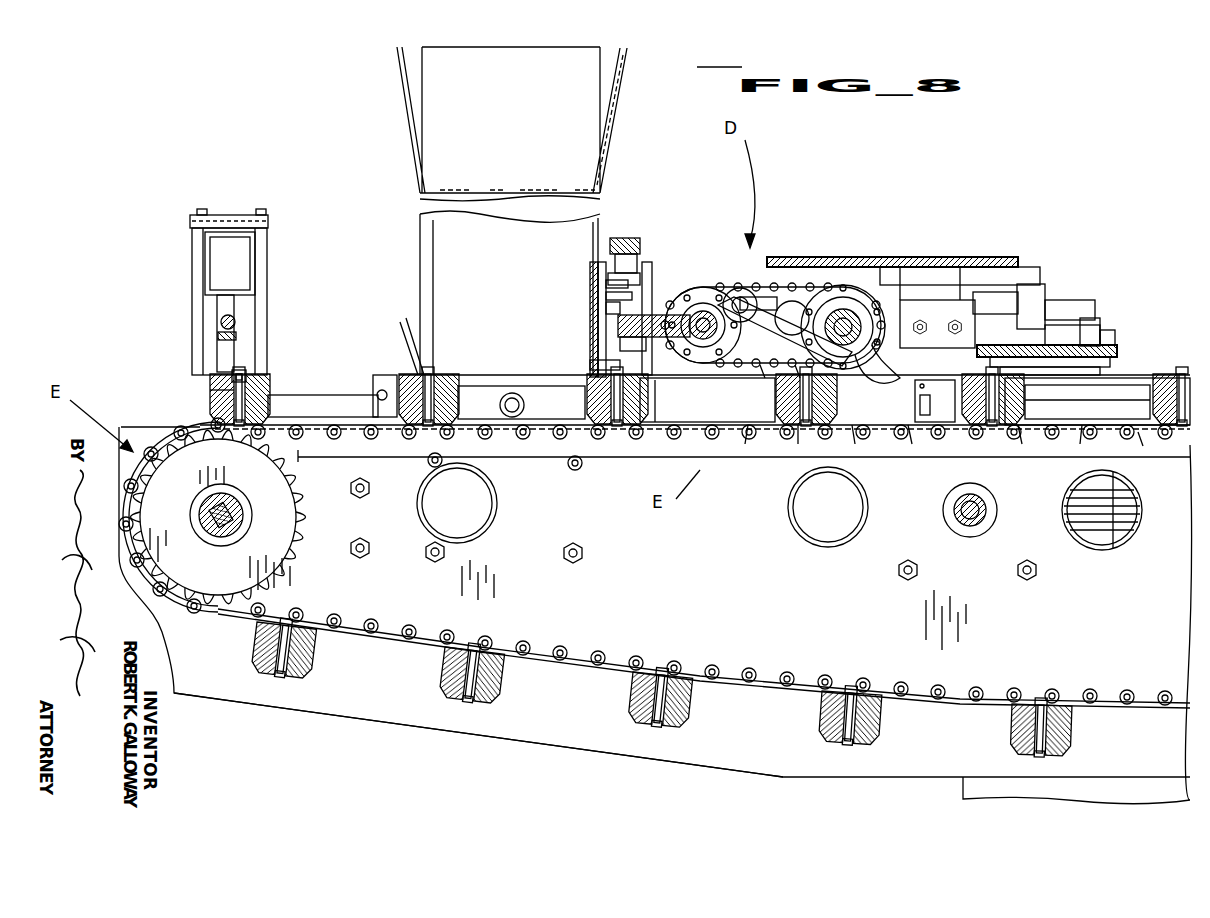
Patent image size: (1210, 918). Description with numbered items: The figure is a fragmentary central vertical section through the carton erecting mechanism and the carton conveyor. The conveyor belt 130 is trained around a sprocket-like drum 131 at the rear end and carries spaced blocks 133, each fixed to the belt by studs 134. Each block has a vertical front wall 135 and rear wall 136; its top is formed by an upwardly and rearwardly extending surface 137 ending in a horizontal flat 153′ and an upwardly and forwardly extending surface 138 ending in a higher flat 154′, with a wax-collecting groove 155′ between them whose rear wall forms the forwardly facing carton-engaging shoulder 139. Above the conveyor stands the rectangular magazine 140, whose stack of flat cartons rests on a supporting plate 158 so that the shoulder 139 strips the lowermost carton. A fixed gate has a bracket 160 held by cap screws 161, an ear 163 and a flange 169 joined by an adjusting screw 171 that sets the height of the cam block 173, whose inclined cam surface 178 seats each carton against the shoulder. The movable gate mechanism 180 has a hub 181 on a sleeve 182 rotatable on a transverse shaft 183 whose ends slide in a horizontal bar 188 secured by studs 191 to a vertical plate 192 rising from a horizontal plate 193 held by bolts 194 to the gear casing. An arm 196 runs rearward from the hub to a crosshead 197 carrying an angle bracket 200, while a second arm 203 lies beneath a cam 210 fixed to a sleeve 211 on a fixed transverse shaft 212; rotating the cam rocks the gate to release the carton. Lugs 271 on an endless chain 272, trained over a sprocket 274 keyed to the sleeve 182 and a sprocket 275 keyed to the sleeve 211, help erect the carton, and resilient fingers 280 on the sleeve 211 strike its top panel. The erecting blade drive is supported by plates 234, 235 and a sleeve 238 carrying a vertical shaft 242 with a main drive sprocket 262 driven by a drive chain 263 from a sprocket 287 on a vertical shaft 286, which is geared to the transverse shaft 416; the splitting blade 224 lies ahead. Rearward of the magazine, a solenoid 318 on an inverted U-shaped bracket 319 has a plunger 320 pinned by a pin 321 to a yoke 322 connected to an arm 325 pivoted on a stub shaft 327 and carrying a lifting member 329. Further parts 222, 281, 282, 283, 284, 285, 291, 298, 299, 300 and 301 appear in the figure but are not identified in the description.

The conveyor belt 130 is at (574, 440).
The sprocket-like drum 131 is at (268, 565).
The block 133 is at (372, 390).
The stud 134 is at (240, 398).
The front wall 135 is at (272, 450).
The rear wall 136 is at (222, 392).
The upwardly and rearwardly extending surface 137 is at (258, 376).
The upwardly and forwardly extending surface 138 is at (215, 374).
The carton-engaging shoulder 139 is at (430, 378).
The magazine 140 is at (614, 136).
The horizontal flat 153′ is at (245, 376).
The horizontal flat 154′ is at (240, 370).
The groove 155′ is at (470, 712).
The carton supporting plate 158 is at (530, 385).
The bracket 160 is at (590, 266).
The cap screw 161 is at (598, 313).
The ear 163 is at (606, 282).
The flange 169 is at (606, 295).
The adjusting screw 171 is at (626, 238).
The cam block 173 is at (655, 385).
The cam surface 178 is at (590, 366).
The movable gate mechanism 180 is at (652, 372).
The hub 181 is at (725, 287).
The sleeve 182 is at (712, 300).
The transverse shaft 183 is at (708, 306).
The horizontal bar 188 is at (930, 318).
The stud 191 is at (955, 320).
The vertical plate 192 is at (929, 332).
The horizontal plate 193 is at (1022, 440).
The bolt 194 is at (1020, 362).
The arm 196 is at (688, 314).
The crosshead 197 is at (618, 326).
The angle bracket 200 is at (620, 346).
The second arm 203 is at (800, 385).
The cam 210 is at (855, 440).
The sleeve 211 is at (868, 300).
The fixed transverse shaft 212 is at (862, 312).
The frame member 222 is at (707, 400).
The splitting blade 224 is at (742, 440).
The plate 234 is at (1040, 300).
The plate 235 is at (1045, 310).
The sleeve 238 is at (790, 370).
The vertically extending shaft 242 is at (846, 312).
The main drive sprocket 262 is at (772, 325).
The drive chain 263 is at (916, 322).
The lug 271 is at (703, 312).
The endless chain 272 is at (795, 302).
The sprocket 274 is at (748, 290).
The sprocket 275 is at (797, 440).
The resilient finger 280 is at (914, 440).
The rail section 281 is at (1080, 440).
The block 282 is at (1085, 328).
The block 283 is at (1095, 340).
The block 284 is at (1110, 352).
The plate 285 is at (1000, 345).
The vertical shaft 286 is at (975, 260).
The sprocket 287 is at (990, 266).
The rail section 291 is at (1145, 444).
The bracket 298 is at (924, 390).
The frame box 299 is at (1118, 386).
The bracket 300 is at (942, 408).
The plate 301 is at (1010, 355).
The solenoid 318 is at (250, 252).
The inverted U-shaped bracket 319 is at (215, 215).
The plunger 320 is at (232, 305).
The pin 321 is at (222, 325).
The inverted U-shaped yoke 322 is at (222, 343).
The arm 325 is at (729, 428).
The stub shaft 327 is at (510, 432).
The lifting member 329 is at (395, 373).
The transverse shaft 416 is at (978, 516).